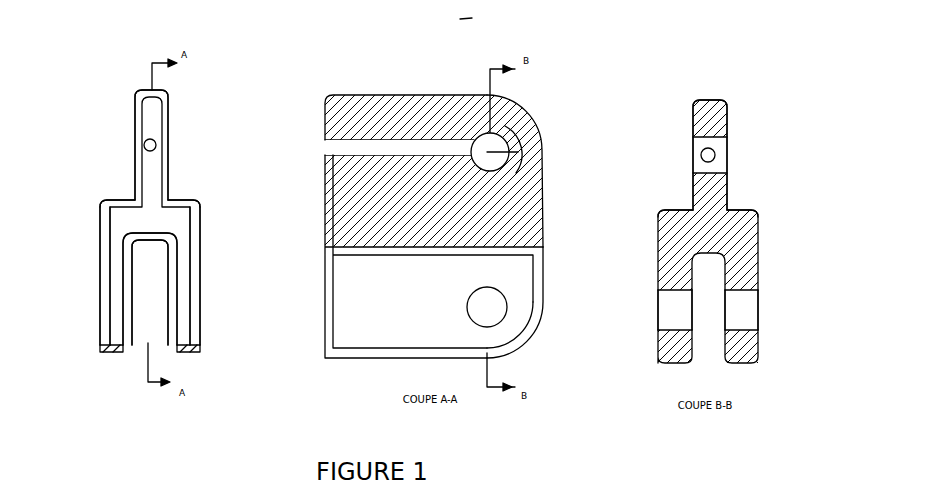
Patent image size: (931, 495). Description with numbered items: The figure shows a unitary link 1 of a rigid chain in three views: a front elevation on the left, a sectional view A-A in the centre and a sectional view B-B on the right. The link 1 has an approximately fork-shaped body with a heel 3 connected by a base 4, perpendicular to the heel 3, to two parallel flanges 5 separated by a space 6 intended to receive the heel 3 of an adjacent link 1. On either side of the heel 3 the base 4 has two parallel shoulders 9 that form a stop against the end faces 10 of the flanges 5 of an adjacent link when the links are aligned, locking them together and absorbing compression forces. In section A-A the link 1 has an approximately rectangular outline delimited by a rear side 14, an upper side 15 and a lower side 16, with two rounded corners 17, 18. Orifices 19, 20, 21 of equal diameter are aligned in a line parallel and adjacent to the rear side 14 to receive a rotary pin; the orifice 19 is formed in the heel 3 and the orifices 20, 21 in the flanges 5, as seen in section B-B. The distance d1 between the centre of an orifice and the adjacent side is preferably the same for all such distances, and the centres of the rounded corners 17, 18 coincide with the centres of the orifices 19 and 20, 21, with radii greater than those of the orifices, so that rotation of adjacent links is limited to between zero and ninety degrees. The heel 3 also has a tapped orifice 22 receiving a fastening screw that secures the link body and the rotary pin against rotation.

The unitary link 1 is at (447, 20).
The heel 3 is at (152, 120).
The base 4 is at (168, 218).
The flanges 5 is at (116, 276).
The space 6 is at (152, 297).
The shoulders 9 is at (112, 197).
The end faces 10 is at (106, 358).
The rear side 14 is at (545, 173).
The upper side 15 is at (378, 95).
The lower side 16 is at (383, 362).
The rounded corner 17 is at (518, 112).
The rounded corner 18 is at (528, 333).
The orifice 19 is at (523, 148).
The orifice 20 is at (497, 305).
The orifice 21 is at (752, 310).
The tapped orifice 22 is at (145, 147).
The distance d1 is at (492, 120).